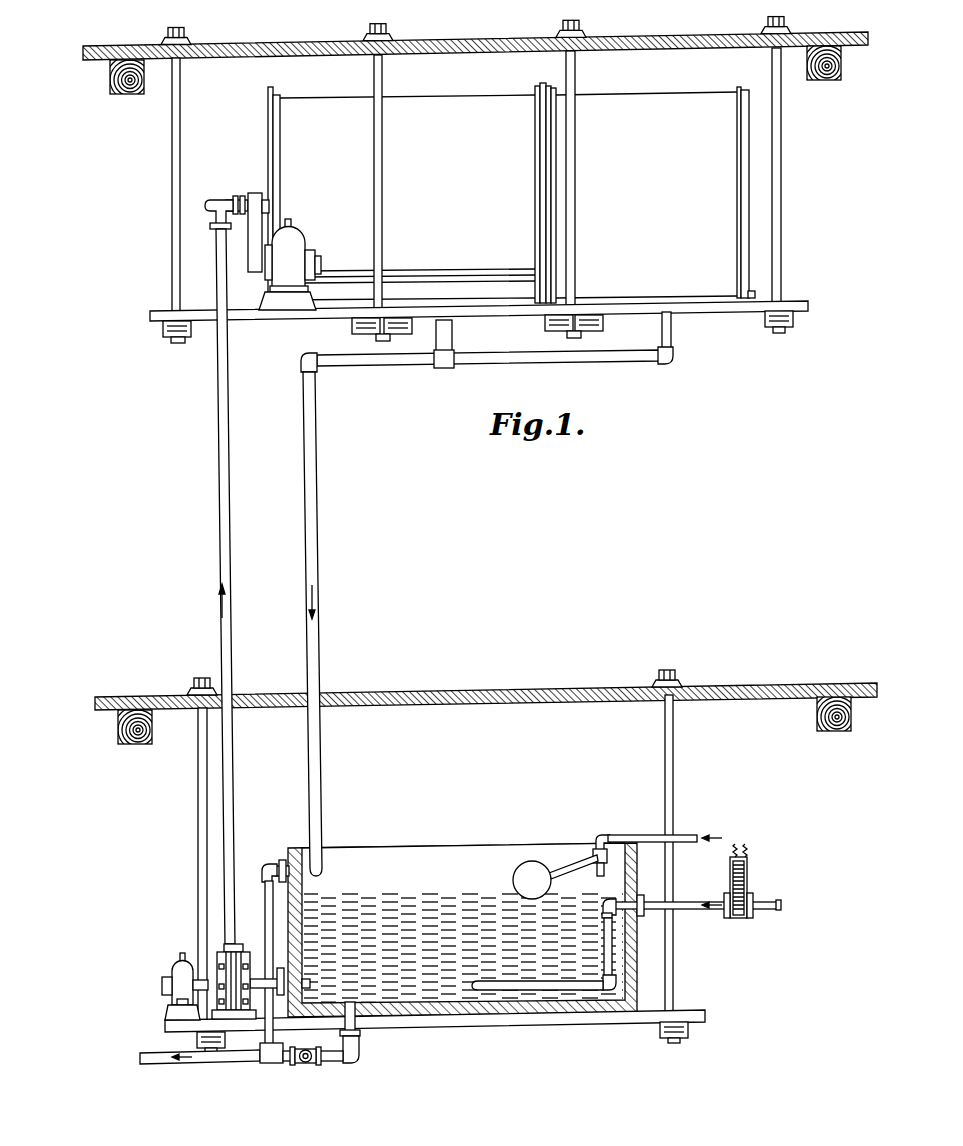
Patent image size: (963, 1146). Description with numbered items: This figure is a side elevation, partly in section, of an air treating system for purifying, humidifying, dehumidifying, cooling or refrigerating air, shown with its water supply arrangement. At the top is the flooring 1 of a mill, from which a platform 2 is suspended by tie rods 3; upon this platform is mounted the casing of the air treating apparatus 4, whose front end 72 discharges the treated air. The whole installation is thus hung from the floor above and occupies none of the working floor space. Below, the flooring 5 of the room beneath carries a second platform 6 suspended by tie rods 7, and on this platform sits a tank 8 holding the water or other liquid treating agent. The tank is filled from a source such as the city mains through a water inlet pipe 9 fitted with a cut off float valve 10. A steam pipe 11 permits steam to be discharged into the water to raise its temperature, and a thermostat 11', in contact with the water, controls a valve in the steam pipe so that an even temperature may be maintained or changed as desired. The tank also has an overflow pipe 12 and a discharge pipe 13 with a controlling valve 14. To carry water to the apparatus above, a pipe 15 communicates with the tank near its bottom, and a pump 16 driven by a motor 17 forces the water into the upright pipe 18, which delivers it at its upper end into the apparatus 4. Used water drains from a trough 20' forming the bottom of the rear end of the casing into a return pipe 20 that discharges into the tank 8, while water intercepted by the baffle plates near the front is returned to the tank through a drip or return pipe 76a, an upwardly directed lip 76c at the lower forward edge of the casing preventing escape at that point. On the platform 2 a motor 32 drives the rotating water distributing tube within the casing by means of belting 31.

The flooring 1 is at (498, 42).
The platform 2 is at (697, 306).
The tie rods 3 is at (182, 82).
The casing of the apparatus 4 is at (526, 88).
The flooring of the room below 5 is at (496, 695).
The platform 6 is at (546, 1021).
The tie rods 7 is at (199, 764).
The tank 8 is at (445, 847).
The water inlet pipe 9 is at (687, 838).
The cut off float valve 10 is at (566, 866).
The steam pipe 11 is at (626, 933).
The thermostat 11' is at (760, 881).
The overflow pipe 12 is at (263, 882).
The discharge pipe 13 is at (359, 1039).
The controlling valve 14 is at (308, 1063).
The pipe 15 is at (259, 972).
The pump 16 is at (218, 962).
The motor 17 is at (168, 980).
The upright pipe 18 is at (216, 273).
The return pipe 20 is at (486, 594).
The trough 20' is at (467, 320).
The belting 31 is at (250, 195).
The motor 32 is at (292, 236).
The front end 72 is at (752, 189).
The drip or return pipe 76a is at (656, 353).
The upwardly directed lip 76c is at (753, 296).